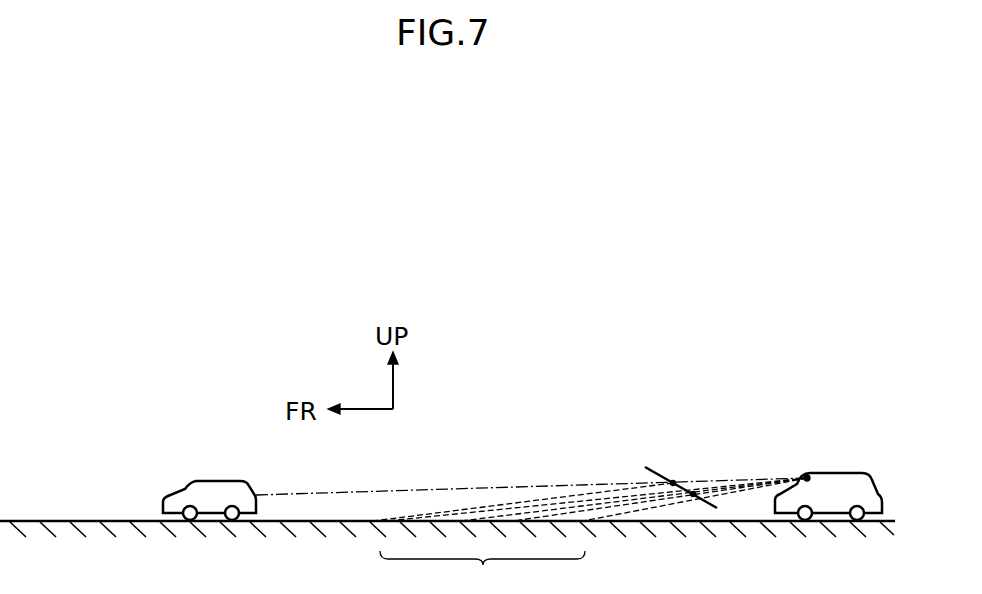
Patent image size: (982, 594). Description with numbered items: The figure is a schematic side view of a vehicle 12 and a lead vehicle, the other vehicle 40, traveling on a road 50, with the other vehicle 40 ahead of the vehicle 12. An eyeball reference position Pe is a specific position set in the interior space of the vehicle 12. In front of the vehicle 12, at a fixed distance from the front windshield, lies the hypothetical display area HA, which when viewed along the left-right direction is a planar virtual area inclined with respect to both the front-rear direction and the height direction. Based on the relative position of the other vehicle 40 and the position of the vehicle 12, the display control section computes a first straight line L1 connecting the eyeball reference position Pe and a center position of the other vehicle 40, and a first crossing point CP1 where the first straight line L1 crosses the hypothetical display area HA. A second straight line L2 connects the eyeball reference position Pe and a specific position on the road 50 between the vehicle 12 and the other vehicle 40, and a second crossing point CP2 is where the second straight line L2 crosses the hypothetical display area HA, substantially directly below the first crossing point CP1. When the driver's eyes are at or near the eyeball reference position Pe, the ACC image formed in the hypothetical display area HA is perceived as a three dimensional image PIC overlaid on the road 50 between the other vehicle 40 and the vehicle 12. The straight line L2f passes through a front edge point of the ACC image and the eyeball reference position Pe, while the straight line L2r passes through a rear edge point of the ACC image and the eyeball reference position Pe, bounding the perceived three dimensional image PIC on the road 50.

The road 50 is at (32, 521).
The other vehicle 40 is at (207, 488).
The vehicle 12 is at (853, 476).
The eyeball reference position Pe is at (810, 477).
The first straight line L1 is at (403, 489).
The straight line L2f is at (502, 508).
The second straight line L2 is at (562, 510).
The straight line L2r is at (615, 513).
The hypothetical display area HA is at (660, 465).
The first crossing point CP1 is at (675, 482).
The second crossing point CP2 is at (695, 493).
The three dimensional image PIC is at (482, 572).